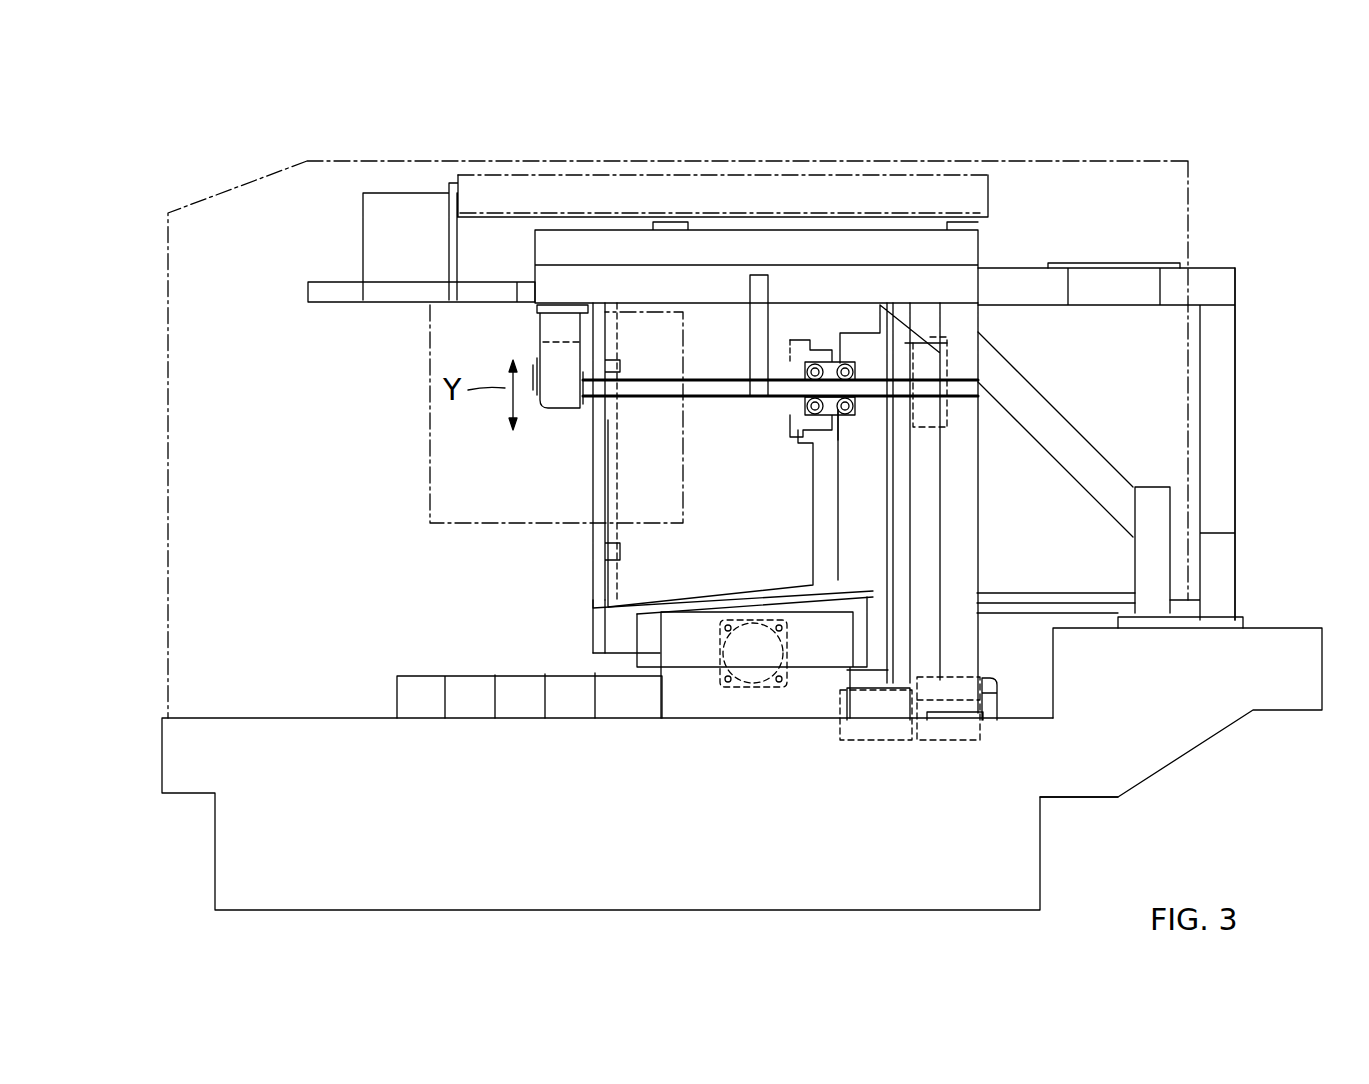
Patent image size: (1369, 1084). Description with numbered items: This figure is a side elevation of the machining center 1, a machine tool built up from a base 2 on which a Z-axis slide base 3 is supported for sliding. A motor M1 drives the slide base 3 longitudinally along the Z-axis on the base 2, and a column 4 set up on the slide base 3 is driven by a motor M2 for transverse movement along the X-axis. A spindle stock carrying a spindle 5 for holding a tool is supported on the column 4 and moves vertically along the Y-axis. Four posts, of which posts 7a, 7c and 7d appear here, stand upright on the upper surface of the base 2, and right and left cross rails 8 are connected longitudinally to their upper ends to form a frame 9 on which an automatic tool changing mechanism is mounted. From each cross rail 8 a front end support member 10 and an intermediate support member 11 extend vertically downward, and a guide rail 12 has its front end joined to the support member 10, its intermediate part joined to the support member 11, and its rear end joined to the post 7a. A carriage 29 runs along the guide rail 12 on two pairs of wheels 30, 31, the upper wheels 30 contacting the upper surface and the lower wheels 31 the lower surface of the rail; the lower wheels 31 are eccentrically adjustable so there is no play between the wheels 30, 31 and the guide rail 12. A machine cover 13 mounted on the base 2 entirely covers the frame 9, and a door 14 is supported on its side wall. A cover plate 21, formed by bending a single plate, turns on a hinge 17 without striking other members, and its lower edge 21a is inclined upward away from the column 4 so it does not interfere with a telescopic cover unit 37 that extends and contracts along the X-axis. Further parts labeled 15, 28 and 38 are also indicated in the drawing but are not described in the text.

The machining center 1 is at (1252, 333).
The base 2 is at (190, 777).
The Z-axis slide base 3 is at (793, 707).
The column 4 is at (600, 637).
The spindle 5 is at (587, 337).
The post 7a is at (963, 327).
The post 7c is at (1157, 580).
The post 7d is at (1217, 370).
The cross rail 8 is at (913, 277).
The frame 9 is at (1193, 267).
The front end support member 10 is at (560, 317).
The intermediate support member 11 is at (762, 277).
The guide rail 12 is at (705, 395).
The machine cover 13 is at (238, 167).
The door 14 is at (428, 500).
The saddle 15 is at (815, 547).
The hinge 17 is at (583, 378).
The cover plate 21 is at (873, 593).
The lower edge of cover plate 21a is at (760, 602).
The upper clamp 28 is at (810, 337).
The carriage 29 is at (857, 410).
The upper wheel 30 is at (847, 360).
The lower wheel 31 is at (840, 417).
The telescopic cover unit 37 is at (647, 618).
The cover 38 is at (390, 417).
The motor M1 is at (797, 557).
The motor M2 is at (740, 687).